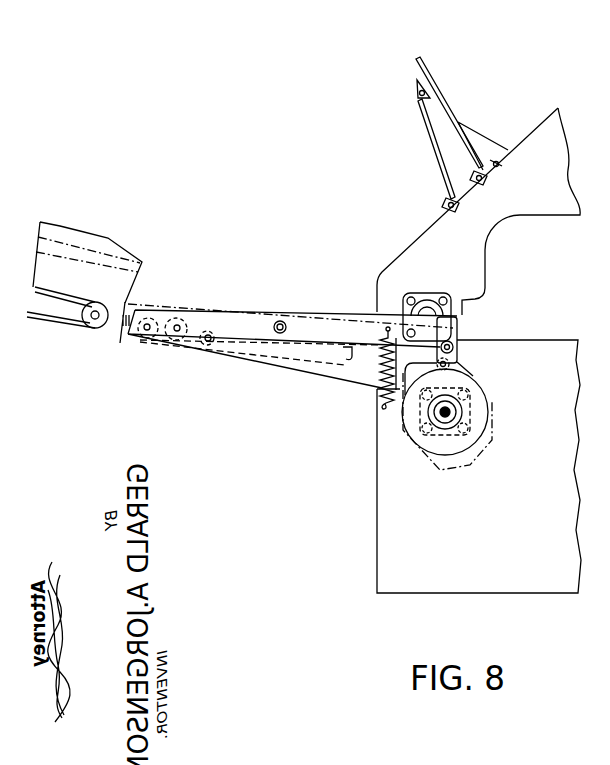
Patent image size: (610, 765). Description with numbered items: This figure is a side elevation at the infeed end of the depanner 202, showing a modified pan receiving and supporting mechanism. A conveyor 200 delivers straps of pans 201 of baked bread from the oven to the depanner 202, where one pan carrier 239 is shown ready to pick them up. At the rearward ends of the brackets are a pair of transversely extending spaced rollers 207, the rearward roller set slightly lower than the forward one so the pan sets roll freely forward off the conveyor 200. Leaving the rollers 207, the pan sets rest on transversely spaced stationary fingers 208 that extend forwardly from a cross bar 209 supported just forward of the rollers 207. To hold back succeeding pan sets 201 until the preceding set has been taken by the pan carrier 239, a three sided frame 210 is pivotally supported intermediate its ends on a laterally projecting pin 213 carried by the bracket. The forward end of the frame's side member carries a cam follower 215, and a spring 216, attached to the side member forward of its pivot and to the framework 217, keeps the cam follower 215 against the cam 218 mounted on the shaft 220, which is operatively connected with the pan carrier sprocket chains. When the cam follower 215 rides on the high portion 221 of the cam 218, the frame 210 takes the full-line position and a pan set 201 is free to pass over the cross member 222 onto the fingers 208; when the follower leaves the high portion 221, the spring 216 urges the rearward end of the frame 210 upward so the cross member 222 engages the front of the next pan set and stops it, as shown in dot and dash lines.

The conveyor 200 is at (43, 317).
The straps of pans 201 is at (142, 262).
The depanner 202 is at (555, 106).
The rollers 207 is at (182, 320).
The stationary fingers 208 is at (348, 355).
The cross bar 209 is at (207, 342).
The three sided frame 210 is at (302, 333).
The laterally projecting pin 213 is at (280, 320).
The cam follower 215 is at (456, 355).
The spring 216 is at (380, 398).
The framework 217 is at (380, 525).
The cam 218 is at (490, 420).
The shaft 220 is at (444, 420).
The high portion 221 is at (413, 365).
The cross member 222 is at (125, 337).
The pan carrier 239 is at (425, 60).